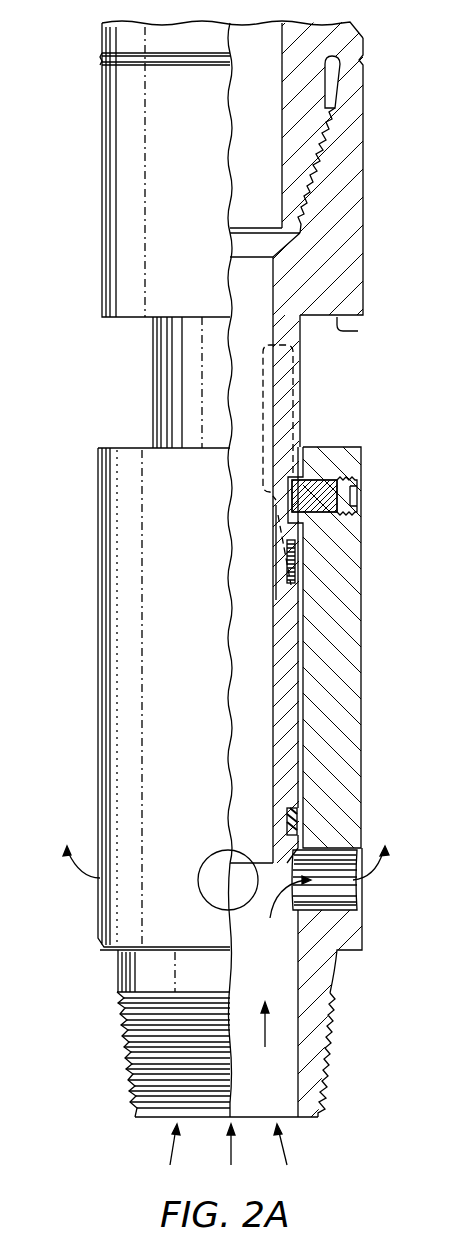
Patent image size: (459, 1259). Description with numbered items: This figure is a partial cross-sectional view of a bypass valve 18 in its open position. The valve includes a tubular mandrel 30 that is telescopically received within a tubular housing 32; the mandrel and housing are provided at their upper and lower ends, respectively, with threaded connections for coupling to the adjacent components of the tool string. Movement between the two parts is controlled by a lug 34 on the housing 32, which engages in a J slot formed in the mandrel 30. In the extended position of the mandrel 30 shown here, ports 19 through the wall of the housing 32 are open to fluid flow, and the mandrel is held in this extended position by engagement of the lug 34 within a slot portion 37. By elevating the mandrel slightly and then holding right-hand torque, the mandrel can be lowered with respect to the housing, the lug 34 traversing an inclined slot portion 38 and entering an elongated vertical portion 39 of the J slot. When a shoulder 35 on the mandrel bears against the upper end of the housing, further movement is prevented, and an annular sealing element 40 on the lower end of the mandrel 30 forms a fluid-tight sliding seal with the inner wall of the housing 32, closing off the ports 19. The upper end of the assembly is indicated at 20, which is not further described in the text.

The bypass valve 18 is at (95, 723).
The ports 19 is at (340, 893).
The upper housing cap 20 is at (368, 38).
The tubular mandrel 30 is at (292, 705).
The tubular housing 32 is at (340, 752).
The lug 34 is at (340, 497).
The shoulder 35 is at (358, 331).
The slot portion 37 is at (296, 565).
The inclined slot portion 38 is at (268, 512).
The elongated vertical portion 39 is at (282, 385).
The annular sealing element 40 is at (300, 815).